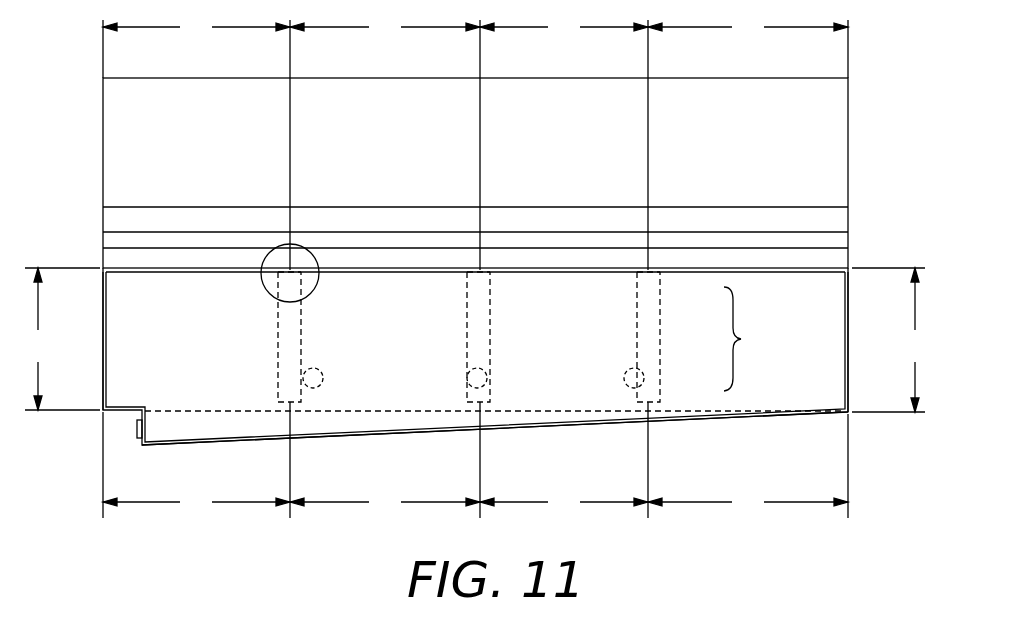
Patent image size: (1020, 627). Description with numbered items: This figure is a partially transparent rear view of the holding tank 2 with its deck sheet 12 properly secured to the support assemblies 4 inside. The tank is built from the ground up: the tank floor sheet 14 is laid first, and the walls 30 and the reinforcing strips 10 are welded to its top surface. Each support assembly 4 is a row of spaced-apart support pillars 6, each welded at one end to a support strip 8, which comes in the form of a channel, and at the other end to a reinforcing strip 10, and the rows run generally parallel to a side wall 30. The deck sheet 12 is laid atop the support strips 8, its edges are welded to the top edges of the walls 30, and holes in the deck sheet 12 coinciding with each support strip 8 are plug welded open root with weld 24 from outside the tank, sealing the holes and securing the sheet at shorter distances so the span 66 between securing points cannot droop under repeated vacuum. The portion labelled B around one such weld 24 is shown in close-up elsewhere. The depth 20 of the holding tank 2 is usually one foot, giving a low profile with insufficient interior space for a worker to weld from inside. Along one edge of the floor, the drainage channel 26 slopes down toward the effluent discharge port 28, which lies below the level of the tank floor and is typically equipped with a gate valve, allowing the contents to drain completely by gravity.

The holding tank 2 is at (878, 426).
The support assembly 4 is at (768, 355).
The support pillar 6 is at (278, 358).
The support strip 8 is at (280, 276).
The reinforcing strip 10 is at (292, 403).
The deck sheet 12 is at (768, 268).
The tank floor sheet 14 is at (530, 412).
The depth 20 is at (50, 358).
The weld 24 is at (291, 268).
The drainage channel 26 is at (196, 443).
The effluent discharge port 28 is at (137, 436).
The wall 30 is at (103, 318).
The span 66 is at (209, 40).
The portion of the holding tank B is at (290, 268).